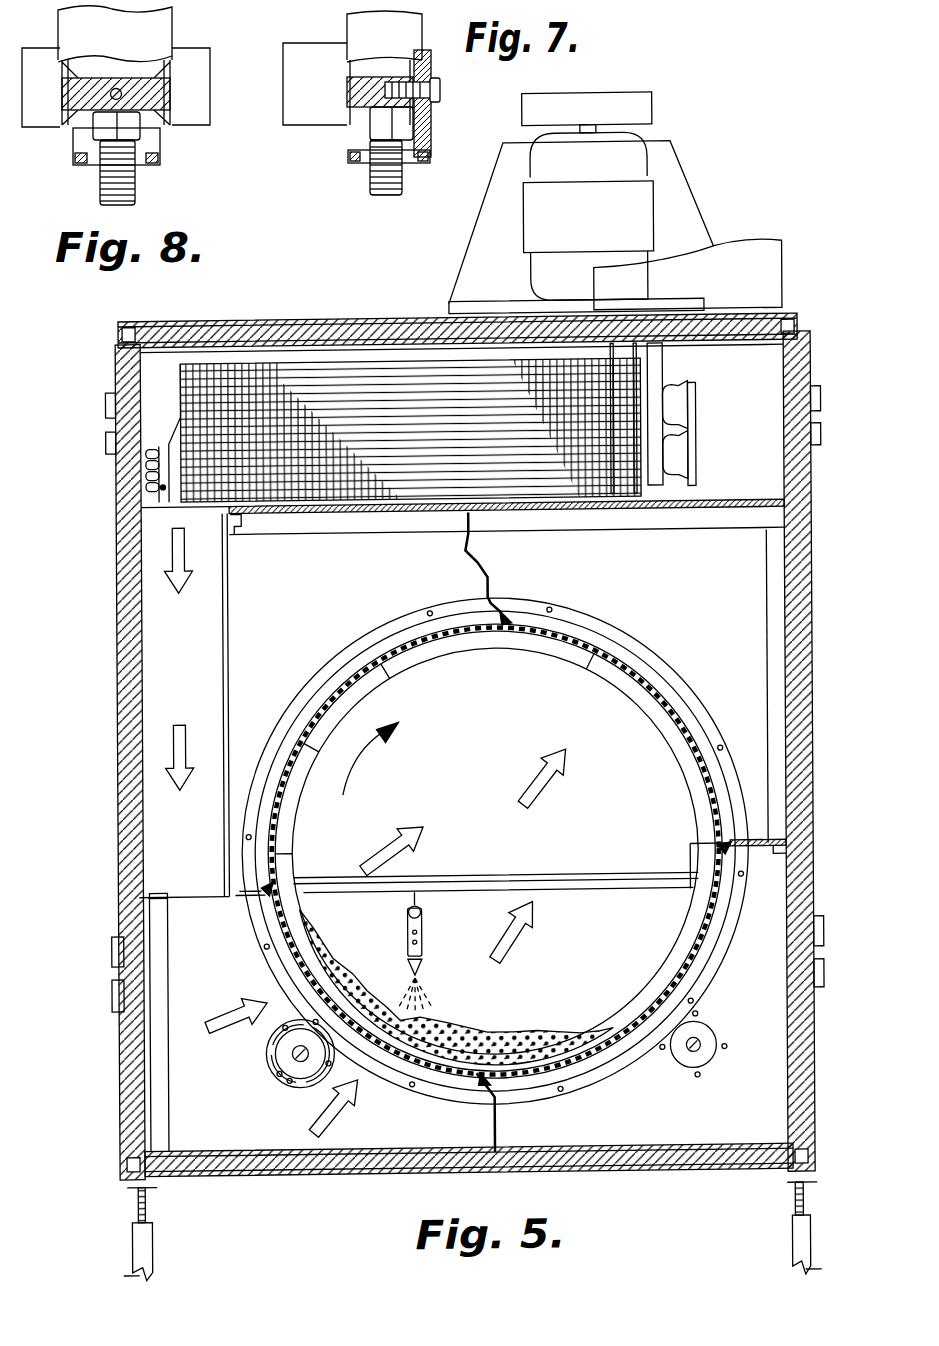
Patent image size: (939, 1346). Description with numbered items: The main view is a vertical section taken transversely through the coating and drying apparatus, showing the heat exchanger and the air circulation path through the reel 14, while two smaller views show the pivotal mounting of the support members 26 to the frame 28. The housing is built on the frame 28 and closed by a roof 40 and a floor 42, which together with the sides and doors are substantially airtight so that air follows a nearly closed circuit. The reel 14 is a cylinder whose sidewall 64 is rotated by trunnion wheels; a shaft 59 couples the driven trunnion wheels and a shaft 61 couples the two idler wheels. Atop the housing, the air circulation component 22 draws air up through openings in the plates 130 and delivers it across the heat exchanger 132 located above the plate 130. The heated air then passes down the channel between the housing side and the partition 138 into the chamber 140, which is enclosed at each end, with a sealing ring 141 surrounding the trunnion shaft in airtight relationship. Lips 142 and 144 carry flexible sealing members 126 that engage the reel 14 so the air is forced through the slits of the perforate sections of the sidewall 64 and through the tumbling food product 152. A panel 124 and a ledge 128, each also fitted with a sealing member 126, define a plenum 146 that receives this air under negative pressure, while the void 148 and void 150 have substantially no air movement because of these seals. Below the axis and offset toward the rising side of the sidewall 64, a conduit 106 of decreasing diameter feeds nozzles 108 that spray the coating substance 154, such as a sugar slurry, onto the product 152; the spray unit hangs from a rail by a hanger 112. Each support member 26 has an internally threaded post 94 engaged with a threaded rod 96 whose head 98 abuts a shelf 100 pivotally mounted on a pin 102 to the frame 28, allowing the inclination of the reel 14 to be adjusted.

In FIG. 5, the reel 14 is at (428, 653).
In FIG. 5, the air circulation component 22 is at (726, 239).
In FIG. 5, the support members 26 is at (120, 1257).
In FIG. 8, the frame 28 is at (182, 128).
In FIG. 7, the frame 28 is at (332, 25).
In FIG. 5, the roof 40 is at (360, 324).
In FIG. 5, the floor 42 is at (573, 1156).
In FIG. 5, the shaft 59 is at (696, 1048).
In FIG. 5, the shaft 61 is at (288, 1061).
In FIG. 5, the cylindrical sidewall 64 is at (596, 654).
In FIG. 5, the internally threaded post 94 is at (147, 1256).
In FIG. 8, the threaded rod 96 is at (138, 178).
In FIG. 7, the threaded rod 96 is at (402, 173).
In FIG. 5, the threaded rod 96 is at (143, 1196).
In FIG. 8, the head 98 is at (97, 130).
In FIG. 7, the head 98 is at (367, 132).
In FIG. 8, the shelf 100 is at (78, 62).
In FIG. 7, the shelf 100 is at (392, 56).
In FIG. 8, the pin 102 is at (118, 88).
In FIG. 7, the pin 102 is at (440, 97).
In FIG. 5, the conduit 106 is at (419, 942).
In FIG. 5, the nozzle 108 is at (419, 969).
In FIG. 5, the hanger 112 is at (416, 921).
In FIG. 5, the panel 124 is at (477, 570).
In FIG. 5, the flexible sealing member 126 is at (507, 625).
In FIG. 5, the ledge 128 is at (755, 855).
In FIG. 5, the plates 130 is at (347, 515).
In FIG. 5, the heat exchanger 132 is at (258, 365).
In FIG. 5, the partition 138 is at (226, 679).
In FIG. 5, the chamber 140 is at (235, 1122).
In FIG. 5, the sealing ring 141 is at (306, 1085).
In FIG. 5, the lip 142 is at (246, 900).
In FIG. 5, the lip 144 is at (495, 1125).
In FIG. 5, the plenum 146 is at (738, 671).
In FIG. 5, the void 148 is at (238, 658).
In FIG. 5, the void 150 is at (763, 1066).
In FIG. 5, the food product 152 is at (526, 1035).
In FIG. 5, the coating substance 154 is at (453, 1007).